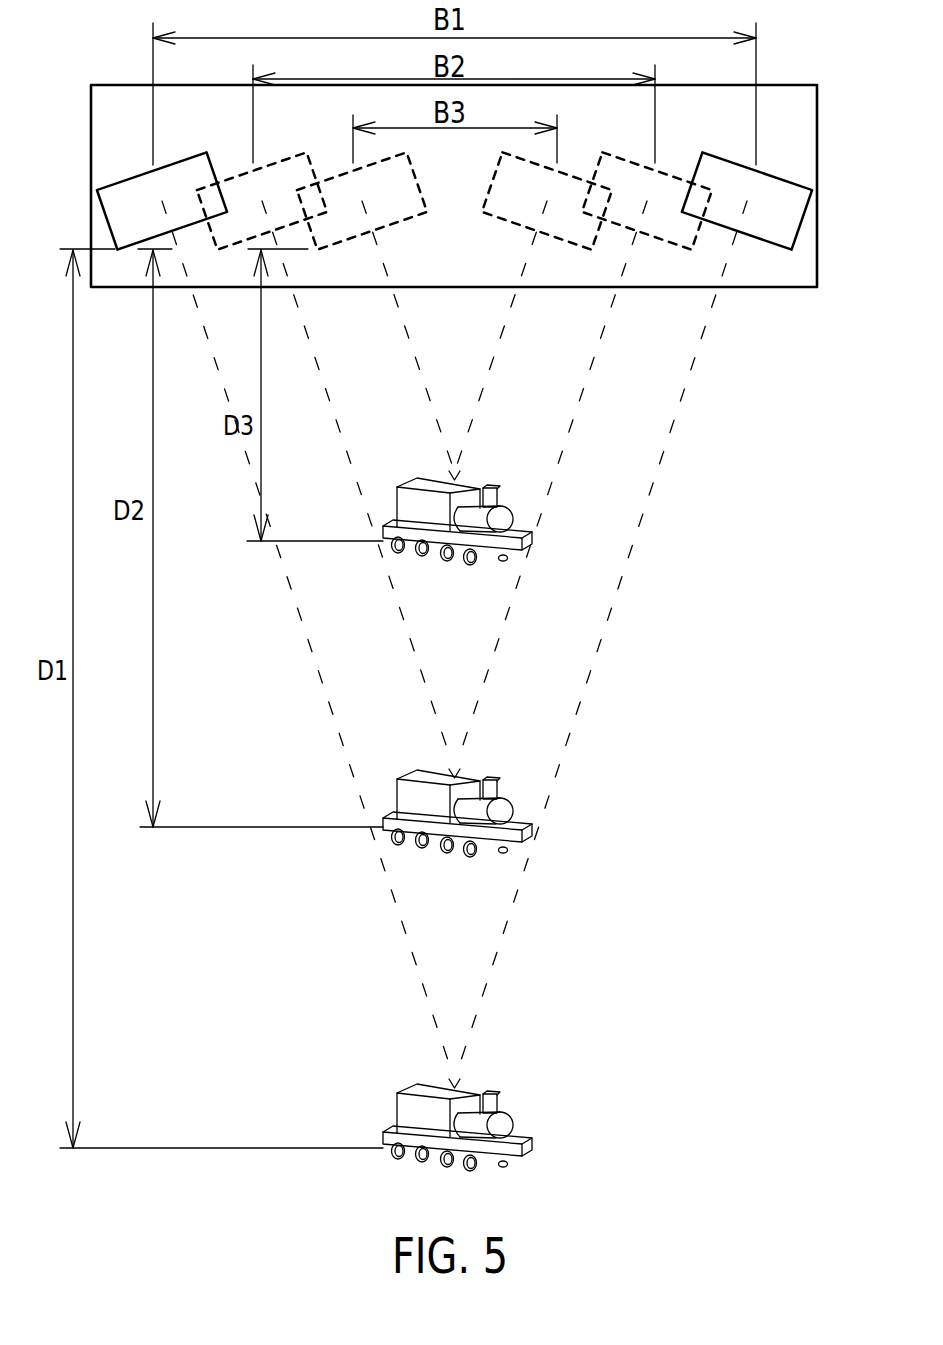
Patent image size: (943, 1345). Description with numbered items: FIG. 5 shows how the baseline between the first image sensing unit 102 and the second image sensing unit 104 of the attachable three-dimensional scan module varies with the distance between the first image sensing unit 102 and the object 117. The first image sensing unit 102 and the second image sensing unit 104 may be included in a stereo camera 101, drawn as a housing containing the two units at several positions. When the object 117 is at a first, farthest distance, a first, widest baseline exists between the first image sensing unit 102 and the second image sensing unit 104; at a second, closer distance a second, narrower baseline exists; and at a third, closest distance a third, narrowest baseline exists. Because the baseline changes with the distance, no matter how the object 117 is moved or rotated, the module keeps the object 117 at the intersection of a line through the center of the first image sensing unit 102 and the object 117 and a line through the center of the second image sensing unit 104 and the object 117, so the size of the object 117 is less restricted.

The stereo camera 101 is at (795, 84).
The first image sensing unit 102 is at (143, 173).
The second image sensing unit 104 is at (762, 172).
The object 117 is at (497, 484).